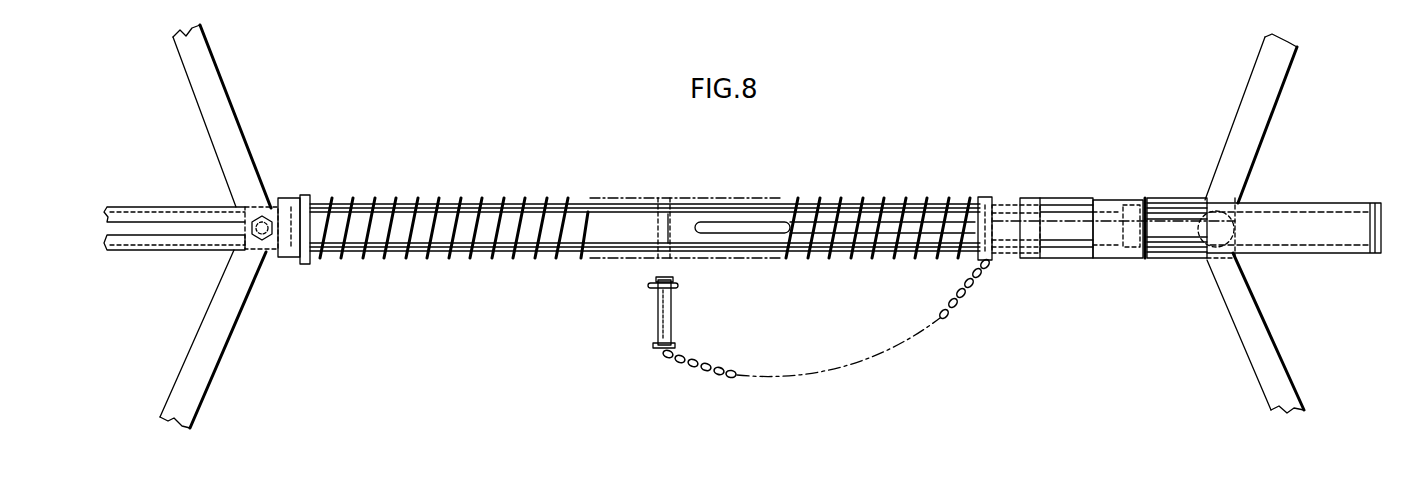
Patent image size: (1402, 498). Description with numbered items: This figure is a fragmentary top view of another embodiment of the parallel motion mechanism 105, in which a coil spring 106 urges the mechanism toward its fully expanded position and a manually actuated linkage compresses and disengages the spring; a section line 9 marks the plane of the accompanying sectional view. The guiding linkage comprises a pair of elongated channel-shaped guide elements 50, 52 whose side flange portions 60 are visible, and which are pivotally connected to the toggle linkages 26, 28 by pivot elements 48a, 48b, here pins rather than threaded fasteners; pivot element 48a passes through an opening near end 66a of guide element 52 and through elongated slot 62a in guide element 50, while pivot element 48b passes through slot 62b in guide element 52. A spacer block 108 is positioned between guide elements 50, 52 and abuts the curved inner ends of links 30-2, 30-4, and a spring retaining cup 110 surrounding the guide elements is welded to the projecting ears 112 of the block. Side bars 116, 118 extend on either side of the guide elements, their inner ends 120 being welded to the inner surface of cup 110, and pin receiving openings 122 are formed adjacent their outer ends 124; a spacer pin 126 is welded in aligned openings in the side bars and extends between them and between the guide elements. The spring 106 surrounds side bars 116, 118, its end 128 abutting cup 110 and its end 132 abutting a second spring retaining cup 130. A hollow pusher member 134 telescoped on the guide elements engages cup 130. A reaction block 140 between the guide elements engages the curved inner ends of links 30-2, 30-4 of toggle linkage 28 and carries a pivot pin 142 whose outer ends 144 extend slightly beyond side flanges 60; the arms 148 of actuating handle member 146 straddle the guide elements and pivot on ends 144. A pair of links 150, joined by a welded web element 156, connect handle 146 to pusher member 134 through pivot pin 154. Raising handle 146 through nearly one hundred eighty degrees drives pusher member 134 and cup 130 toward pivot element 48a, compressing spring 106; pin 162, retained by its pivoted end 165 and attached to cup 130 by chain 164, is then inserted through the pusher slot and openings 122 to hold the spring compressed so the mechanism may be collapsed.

The section line 9 is at (80, 290).
The toggle linkage 26 is at (137, 94).
The toggle linkage 28 is at (1316, 133).
The link 30-2 is at (217, 83).
The link 30-4 is at (220, 350).
The pivot element 48a is at (268, 205).
The pivot element 48b is at (1203, 260).
The guide element 50 is at (133, 249).
The guide element 52 is at (775, 237).
The side flange portion 60 is at (733, 208).
The elongated slot 62a is at (142, 223).
The elongated slot 62b is at (783, 228).
The end of guide element 66a is at (245, 234).
The mechanism 105 is at (457, 262).
The coil spring 106 is at (435, 198).
The spacer block 108 is at (291, 258).
The spring retaining cup 110 is at (302, 198).
The projecting ear 112 is at (303, 194).
The side bar 116 is at (490, 198).
The side bar 118 is at (520, 258).
The inner end of side bar 120 is at (343, 203).
The pin receiving opening 122 is at (660, 254).
The outer end of side bar 124 is at (687, 202).
The spacer pin 126 is at (552, 235).
The spring end 128 is at (330, 200).
The spring retaining cup 130 is at (988, 197).
The spring end 132 is at (972, 198).
The pusher member 134 is at (1000, 260).
The reaction block 140 is at (1179, 240).
The pivot pin 142 is at (1150, 220).
The outer end of pivot pin 144 is at (1133, 207).
The actuating handle member 146 is at (1313, 230).
The arm 148 is at (1165, 249).
The link 150 is at (1068, 198).
The pivot pin 154 is at (1033, 258).
The web element 156 is at (1121, 258).
The pin 162 is at (672, 334).
The chain 164 is at (945, 320).
The pivoted end 165 is at (650, 288).